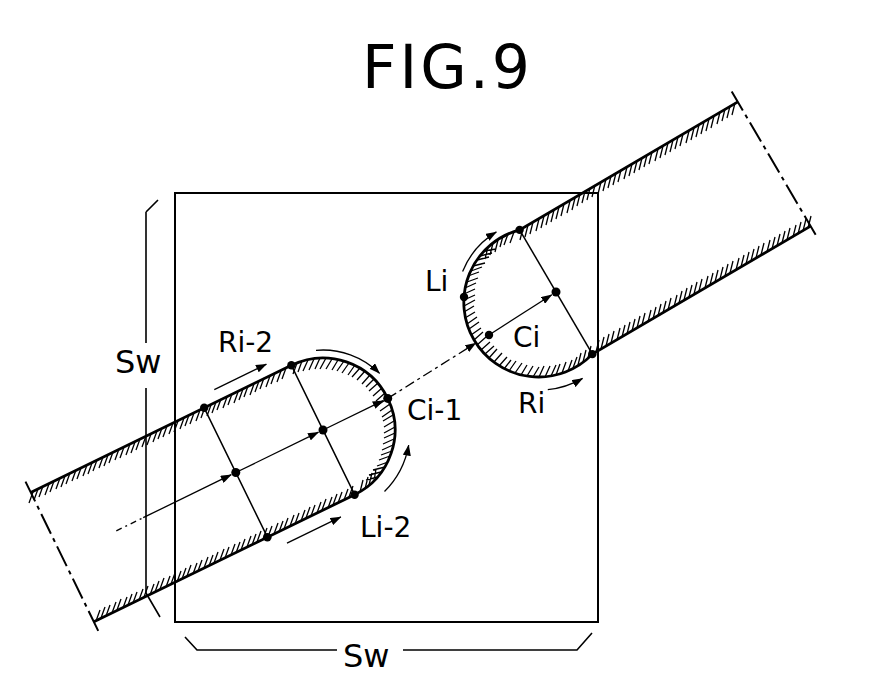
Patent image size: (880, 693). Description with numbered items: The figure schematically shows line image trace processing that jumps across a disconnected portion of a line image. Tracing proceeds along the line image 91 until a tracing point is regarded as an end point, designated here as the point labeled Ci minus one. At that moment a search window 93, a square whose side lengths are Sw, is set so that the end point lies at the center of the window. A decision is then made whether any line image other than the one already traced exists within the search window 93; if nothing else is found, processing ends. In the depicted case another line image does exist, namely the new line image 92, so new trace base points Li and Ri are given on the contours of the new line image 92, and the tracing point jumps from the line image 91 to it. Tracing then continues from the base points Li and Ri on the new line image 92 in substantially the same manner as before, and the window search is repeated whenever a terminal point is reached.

The line image 91 is at (90, 463).
The new line image 92 is at (645, 157).
The search window 93 is at (387, 193).